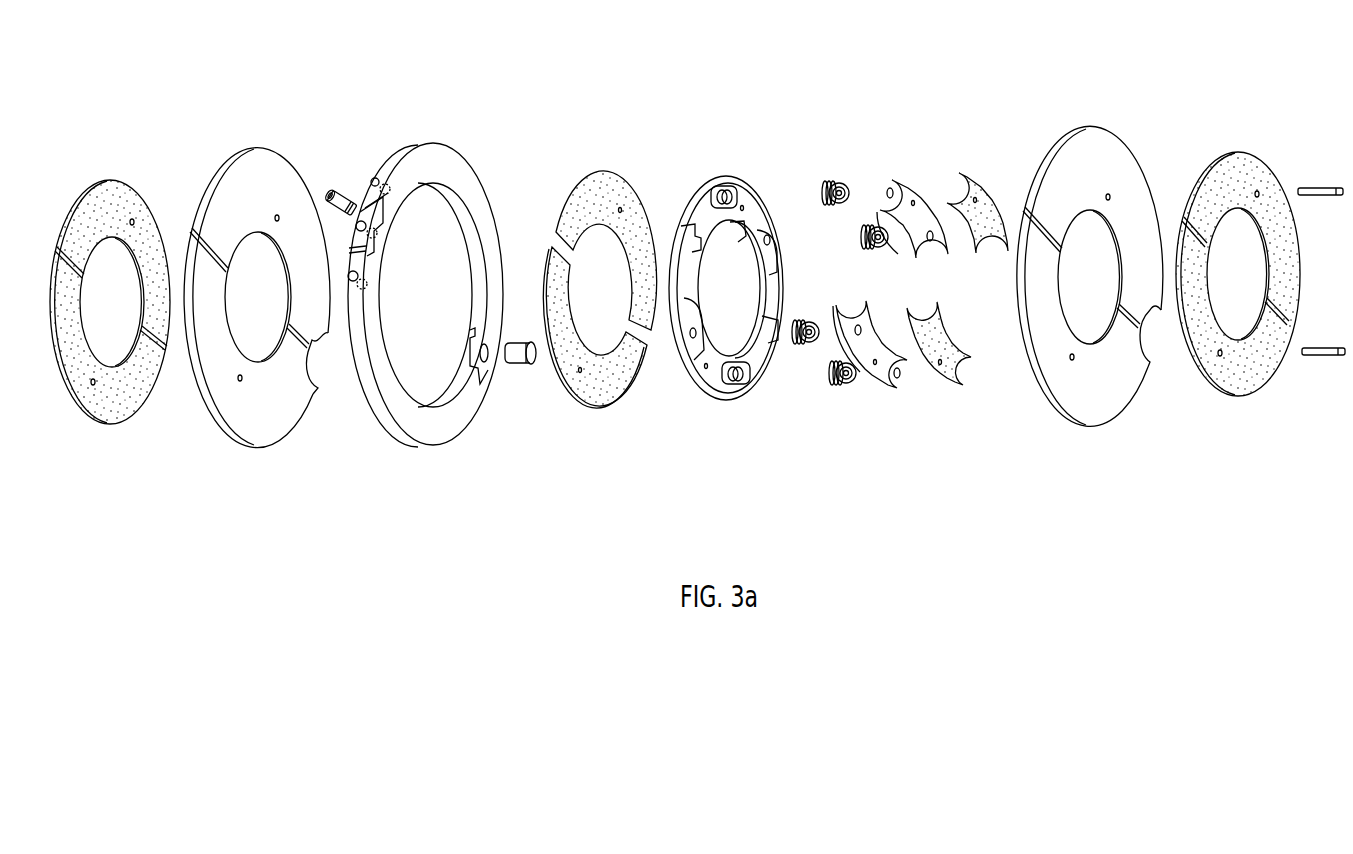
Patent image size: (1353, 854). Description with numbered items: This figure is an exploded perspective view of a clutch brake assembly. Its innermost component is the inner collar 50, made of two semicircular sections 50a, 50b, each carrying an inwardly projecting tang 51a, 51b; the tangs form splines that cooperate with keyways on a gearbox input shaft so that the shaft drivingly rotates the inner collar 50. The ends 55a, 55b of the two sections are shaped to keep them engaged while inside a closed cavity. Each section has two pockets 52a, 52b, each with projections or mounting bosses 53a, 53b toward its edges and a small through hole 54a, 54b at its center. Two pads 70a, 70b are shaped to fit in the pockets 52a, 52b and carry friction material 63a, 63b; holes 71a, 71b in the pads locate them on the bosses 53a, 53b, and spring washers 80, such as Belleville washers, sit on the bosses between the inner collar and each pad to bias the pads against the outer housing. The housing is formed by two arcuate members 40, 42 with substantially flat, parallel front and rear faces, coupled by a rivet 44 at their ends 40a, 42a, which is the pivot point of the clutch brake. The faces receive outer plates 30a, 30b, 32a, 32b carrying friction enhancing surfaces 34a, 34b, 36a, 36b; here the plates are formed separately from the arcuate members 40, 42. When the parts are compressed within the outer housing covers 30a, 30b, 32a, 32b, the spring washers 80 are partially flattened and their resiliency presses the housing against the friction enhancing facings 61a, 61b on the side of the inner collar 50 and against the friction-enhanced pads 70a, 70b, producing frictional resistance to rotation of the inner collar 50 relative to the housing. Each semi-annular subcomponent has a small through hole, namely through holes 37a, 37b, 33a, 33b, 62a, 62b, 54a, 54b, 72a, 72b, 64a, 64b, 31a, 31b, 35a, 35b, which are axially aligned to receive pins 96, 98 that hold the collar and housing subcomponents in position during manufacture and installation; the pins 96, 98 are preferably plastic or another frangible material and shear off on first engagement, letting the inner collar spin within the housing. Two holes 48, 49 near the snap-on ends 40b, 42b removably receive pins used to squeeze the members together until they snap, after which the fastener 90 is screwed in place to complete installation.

The outer plate 30a is at (1091, 260).
The outer plate 30b is at (1091, 284).
The through hole 31a is at (1091, 284).
The through hole 31b is at (1072, 360).
The outer plate 32a is at (274, 276).
The outer plate 32b is at (274, 301).
The through hole 33a is at (274, 269).
The through hole 33b is at (243, 380).
The friction enhancing surface 34a is at (1237, 258).
The friction enhancing surface 34b is at (1237, 281).
The through hole 35a is at (1237, 249).
The through hole 35b is at (1219, 354).
The friction enhancing surface 36a is at (119, 306).
The friction enhancing surface 36b is at (119, 306).
The through hole 37a is at (119, 275).
The through hole 37b is at (92, 383).
The arcuate member 40 is at (425, 272).
The end of arcuate member 40a is at (425, 299).
The snap-on end 40b is at (415, 299).
The arcuate member 42 is at (415, 299).
The end of arcuate member 42a is at (415, 266).
The snap-on end 42b is at (415, 266).
The rivet 44 is at (538, 366).
The hole 48 is at (415, 266).
The hole 49 is at (347, 282).
The inner collar 50 is at (740, 266).
The semicircular section 50a is at (740, 294).
The semicircular section 50b is at (740, 294).
The tang 51a is at (740, 294).
The tang 51b is at (740, 294).
The pocket 52a is at (740, 294).
The pocket 52b is at (740, 294).
The mounting boss 53a is at (740, 294).
The mounting boss 53b is at (740, 314).
The through hole 54a is at (740, 314).
The through hole 54b is at (740, 339).
The end of inner collar segment 55a is at (740, 285).
The end of inner collar segment 55b is at (778, 304).
The friction enhancing facing 61a is at (617, 268).
The friction enhancing facing 61b is at (617, 294).
The through hole 62a is at (605, 264).
The through hole 62b is at (581, 372).
The friction material 63a is at (958, 197).
The friction material 63b is at (965, 372).
The through hole 64a is at (1000, 138).
The through hole 64b is at (965, 370).
The pad 70a is at (930, 168).
The pad 70b is at (894, 386).
The pad hole 71a is at (930, 193).
The pad hole 71b is at (894, 386).
The through hole 72a is at (914, 200).
The through hole 72b is at (875, 365).
The spring washer 80 is at (834, 181).
The fastener 90 is at (335, 190).
The pin 96 is at (1333, 187).
The pin 98 is at (1306, 356).